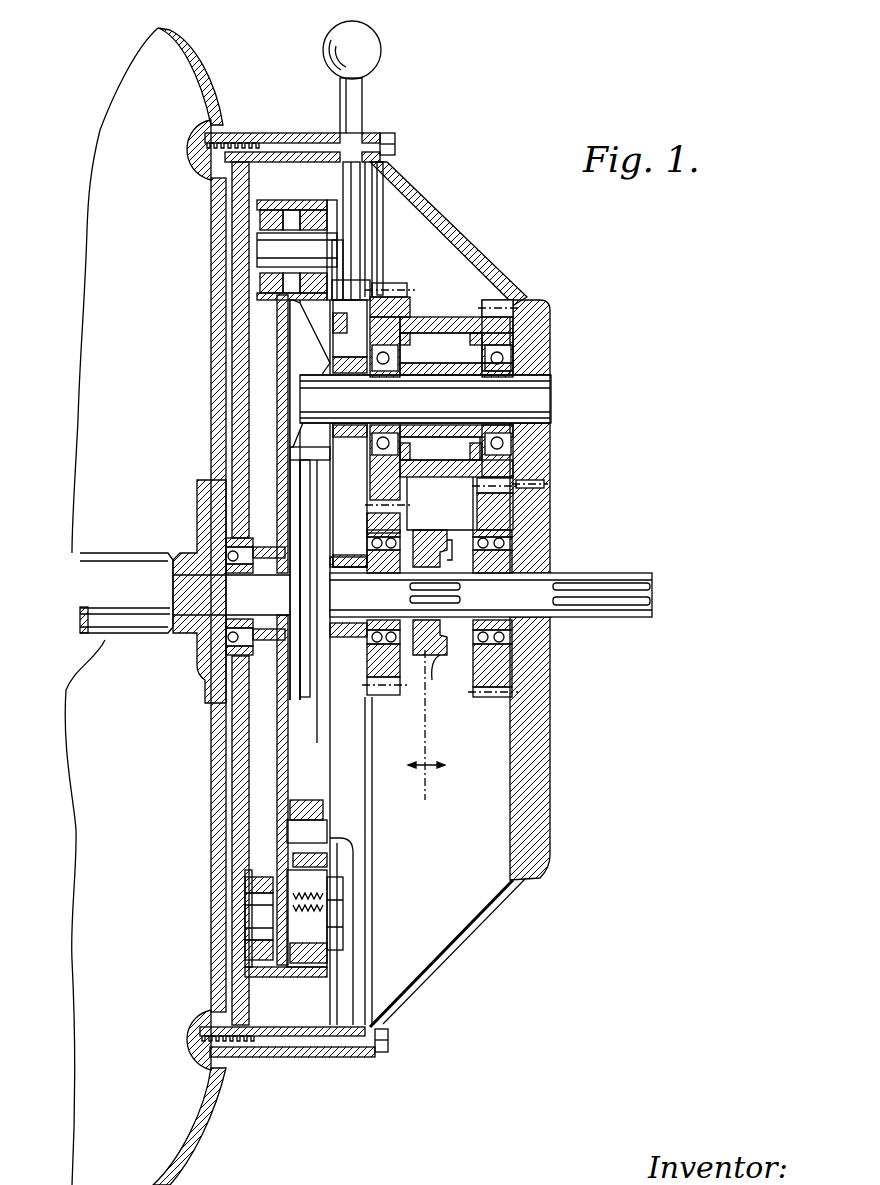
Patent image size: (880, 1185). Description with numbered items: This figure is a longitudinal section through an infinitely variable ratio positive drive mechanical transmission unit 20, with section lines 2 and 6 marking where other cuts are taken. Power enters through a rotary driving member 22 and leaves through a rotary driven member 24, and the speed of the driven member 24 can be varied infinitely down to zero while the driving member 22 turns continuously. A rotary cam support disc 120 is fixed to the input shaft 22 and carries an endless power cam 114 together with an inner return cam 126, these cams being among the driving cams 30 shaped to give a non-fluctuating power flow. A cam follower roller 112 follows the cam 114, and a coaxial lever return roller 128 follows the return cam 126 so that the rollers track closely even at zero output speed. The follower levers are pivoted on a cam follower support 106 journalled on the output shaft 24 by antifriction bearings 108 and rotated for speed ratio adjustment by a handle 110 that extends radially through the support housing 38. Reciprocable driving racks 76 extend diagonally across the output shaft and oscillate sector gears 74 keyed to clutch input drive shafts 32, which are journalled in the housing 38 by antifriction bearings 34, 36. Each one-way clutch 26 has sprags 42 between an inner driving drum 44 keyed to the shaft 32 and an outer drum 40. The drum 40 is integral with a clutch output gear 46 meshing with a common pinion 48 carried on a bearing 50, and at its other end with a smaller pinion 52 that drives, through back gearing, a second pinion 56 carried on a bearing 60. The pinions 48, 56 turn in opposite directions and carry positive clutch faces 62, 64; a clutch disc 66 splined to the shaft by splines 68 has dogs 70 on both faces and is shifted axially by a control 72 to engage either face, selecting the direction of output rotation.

The section line 2- 2 is at (372, 128).
The section line 6- 6 is at (482, 330).
The transmission unit 20 is at (478, 232).
The rotary driving member 22 is at (110, 652).
The rotary driven member 24 is at (618, 572).
The one-way clutch 26 is at (463, 317).
The driving cam 30 is at (277, 206).
The clutch input drive shaft 32 is at (540, 404).
The antifriction bearing 34 is at (353, 443).
The antifriction bearing 36 is at (513, 368).
The support housing 38 is at (251, 131).
The drum 40 is at (427, 476).
The sprag 42 is at (512, 321).
The inner driving drum 44 is at (414, 370).
The clutch output gear 46 is at (390, 285).
The common pinion 48 is at (390, 698).
The antifriction bearing 50 is at (367, 685).
The pinion 52 is at (546, 482).
The second pinion 56 is at (507, 683).
The antifriction bearing 60 is at (505, 643).
The positive clutch face 62 is at (417, 541).
The positive clutch face 64 is at (546, 537).
The clutch disc 66 is at (432, 660).
The splines 68 is at (458, 593).
The dog 70 is at (392, 568).
The control 72 is at (437, 775).
The sector gear 74 is at (315, 360).
The driving rack 76 is at (313, 707).
The cam follower support 106 is at (280, 355).
The antifriction bearing 108 is at (252, 538).
The speed ratio adjustment handle 110 is at (340, 98).
The cam follower roller 112 is at (330, 213).
The cam 114 is at (260, 200).
The cam support disc 120 is at (237, 828).
The return cam 126 is at (267, 298).
The lever return roller 128 is at (260, 214).